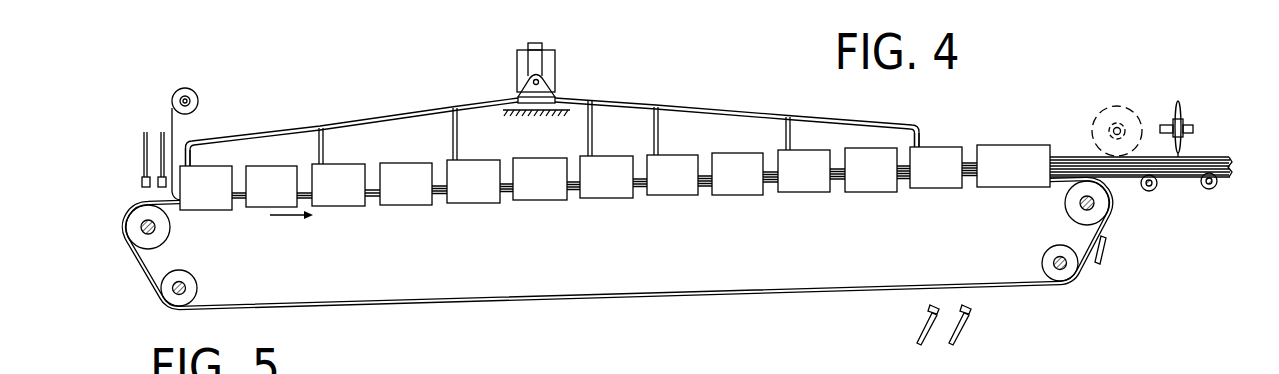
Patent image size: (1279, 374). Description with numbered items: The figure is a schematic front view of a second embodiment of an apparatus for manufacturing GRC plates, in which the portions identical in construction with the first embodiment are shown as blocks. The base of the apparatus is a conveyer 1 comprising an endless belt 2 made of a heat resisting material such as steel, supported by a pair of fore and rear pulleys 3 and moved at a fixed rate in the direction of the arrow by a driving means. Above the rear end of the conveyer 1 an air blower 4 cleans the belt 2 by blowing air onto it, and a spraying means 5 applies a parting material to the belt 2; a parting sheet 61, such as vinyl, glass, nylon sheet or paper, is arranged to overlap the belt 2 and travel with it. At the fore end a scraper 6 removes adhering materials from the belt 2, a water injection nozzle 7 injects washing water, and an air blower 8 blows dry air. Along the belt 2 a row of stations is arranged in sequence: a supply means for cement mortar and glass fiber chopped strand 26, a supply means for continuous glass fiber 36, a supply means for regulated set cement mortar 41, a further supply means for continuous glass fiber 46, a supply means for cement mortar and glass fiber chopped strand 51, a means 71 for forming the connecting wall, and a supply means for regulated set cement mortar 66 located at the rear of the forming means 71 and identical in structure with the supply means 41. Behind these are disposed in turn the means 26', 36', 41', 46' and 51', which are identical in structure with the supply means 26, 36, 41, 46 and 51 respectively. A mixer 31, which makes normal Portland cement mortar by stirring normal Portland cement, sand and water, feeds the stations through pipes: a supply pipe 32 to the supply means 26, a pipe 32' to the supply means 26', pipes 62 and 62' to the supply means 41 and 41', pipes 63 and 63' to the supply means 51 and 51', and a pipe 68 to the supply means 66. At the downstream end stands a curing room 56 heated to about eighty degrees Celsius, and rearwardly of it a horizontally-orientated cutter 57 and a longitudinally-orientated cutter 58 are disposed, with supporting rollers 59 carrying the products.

The conveyer 1 is at (617, 273).
The endless belt 2 is at (613, 302).
The pulleys 3 is at (165, 228).
The air blower 4 is at (160, 184).
The parting material spraying means 5 is at (145, 176).
The scraper 6 is at (1107, 248).
The water injection nozzle 7 is at (968, 307).
The air blower 8 is at (932, 307).
The supply means for normal Portland cement mortar and glass fiber chopped strand 26 is at (206, 188).
The supply means for continuous glass fiber 36 is at (271, 186).
The supply means for regulated set cement mortar 41 is at (338, 185).
The supply means for continuous glass fiber 46 is at (406, 184).
The supply means for cement mortar and glass fiber chopped strand 51 is at (473, 181).
The connecting wall forming means 71 is at (522, 193).
The supply means for regulated set cement mortar 66 is at (589, 191).
The supply means for cement mortar and glass fiber chopped strand 26' is at (672, 175).
The supply means for continuous glass fiber 36' is at (737, 174).
The supply means for regulated set cement mortar 41' is at (804, 171).
The supply means for continuous glass fiber 46' is at (871, 170).
The supply means for cement mortar and glass fiber chopped strand 51' is at (936, 167).
The curing room 56 is at (995, 180).
The mixer 31 is at (566, 60).
The supply pipe 32 is at (217, 139).
The supply pipe 32' is at (690, 131).
The horizontally-orientated cutter 57 is at (1117, 112).
The longitudinally-orientated cutter 58 is at (1182, 116).
The supporting roller 59 is at (1149, 192).
The parting sheet 61 is at (176, 92).
The supply pipe 62 is at (351, 144).
The supply pipe 62' is at (818, 135).
The supply pipe 63 is at (486, 134).
The supply pipe 63' is at (954, 125).
The supply pipe 68 is at (593, 128).